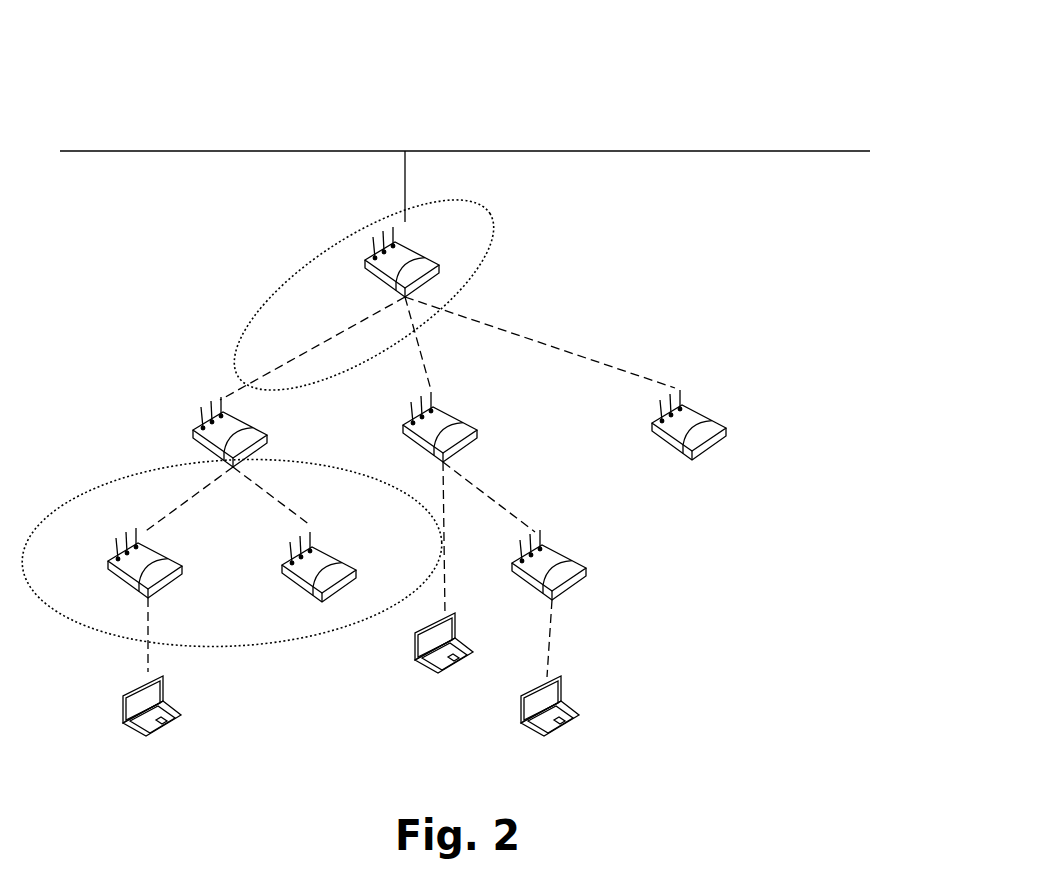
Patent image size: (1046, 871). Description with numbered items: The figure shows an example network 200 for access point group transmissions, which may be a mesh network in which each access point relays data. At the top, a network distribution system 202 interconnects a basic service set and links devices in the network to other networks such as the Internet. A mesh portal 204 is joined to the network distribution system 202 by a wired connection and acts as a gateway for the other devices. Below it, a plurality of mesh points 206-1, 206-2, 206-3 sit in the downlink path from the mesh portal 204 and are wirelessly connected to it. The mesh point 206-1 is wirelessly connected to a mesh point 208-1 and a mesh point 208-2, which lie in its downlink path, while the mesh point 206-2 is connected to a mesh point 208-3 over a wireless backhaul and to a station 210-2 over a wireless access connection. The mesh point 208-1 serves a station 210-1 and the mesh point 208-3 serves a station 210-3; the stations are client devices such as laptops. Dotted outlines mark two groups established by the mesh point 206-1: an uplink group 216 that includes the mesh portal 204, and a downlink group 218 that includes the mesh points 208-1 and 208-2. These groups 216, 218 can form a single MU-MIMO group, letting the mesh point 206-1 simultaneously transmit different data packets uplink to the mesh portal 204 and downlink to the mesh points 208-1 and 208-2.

The network 200 is at (646, 69).
The network distribution system 202 is at (798, 152).
The mesh portal 204 is at (418, 255).
The mesh point 206-1 is at (257, 445).
The mesh point 206-2 is at (460, 418).
The mesh point 206-3 is at (700, 418).
The mesh point 208-1 is at (160, 560).
The mesh point 208-2 is at (332, 562).
The mesh point 208-3 is at (562, 557).
The station 210-1 is at (168, 707).
The station 210-2 is at (414, 676).
The station 210-3 is at (600, 694).
The group 216 is at (290, 280).
The group 218 is at (103, 493).